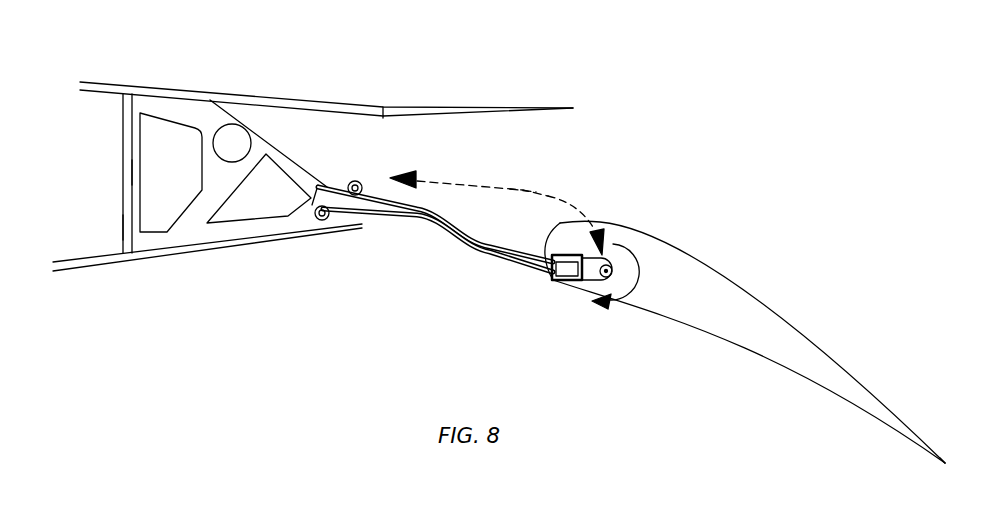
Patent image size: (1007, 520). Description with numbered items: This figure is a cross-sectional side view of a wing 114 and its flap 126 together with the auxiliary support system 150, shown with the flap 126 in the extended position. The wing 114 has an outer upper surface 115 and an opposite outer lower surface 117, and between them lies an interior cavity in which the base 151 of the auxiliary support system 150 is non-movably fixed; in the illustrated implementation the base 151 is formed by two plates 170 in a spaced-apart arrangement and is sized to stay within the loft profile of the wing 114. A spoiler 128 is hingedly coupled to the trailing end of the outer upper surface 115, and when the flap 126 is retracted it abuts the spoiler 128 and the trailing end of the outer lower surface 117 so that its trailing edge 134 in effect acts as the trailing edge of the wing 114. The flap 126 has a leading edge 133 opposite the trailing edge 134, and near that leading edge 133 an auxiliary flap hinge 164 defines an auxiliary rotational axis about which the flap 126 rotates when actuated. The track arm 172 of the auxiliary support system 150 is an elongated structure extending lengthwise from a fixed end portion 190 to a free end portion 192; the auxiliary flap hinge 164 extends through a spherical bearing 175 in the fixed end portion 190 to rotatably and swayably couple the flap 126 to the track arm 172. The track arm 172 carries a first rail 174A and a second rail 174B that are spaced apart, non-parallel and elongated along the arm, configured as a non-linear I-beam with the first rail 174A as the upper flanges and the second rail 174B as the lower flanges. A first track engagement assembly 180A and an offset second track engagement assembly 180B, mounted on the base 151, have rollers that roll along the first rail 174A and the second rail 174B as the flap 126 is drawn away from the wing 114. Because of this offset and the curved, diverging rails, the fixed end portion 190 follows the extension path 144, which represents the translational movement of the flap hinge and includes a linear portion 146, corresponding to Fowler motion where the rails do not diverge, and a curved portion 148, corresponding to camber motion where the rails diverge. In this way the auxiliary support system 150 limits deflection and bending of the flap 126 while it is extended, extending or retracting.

The wing 114 is at (307, 108).
The outer upper surface 115 is at (213, 92).
The outer lower surface 117 is at (150, 260).
The flap 126 is at (732, 307).
The spoiler 128 is at (462, 110).
The leading edge of the flap 133 is at (560, 223).
The trailing edge of the flap 134 is at (945, 465).
The extension path 144 is at (523, 188).
The linear portion 146 is at (457, 180).
The curved portion 148 is at (573, 207).
The auxiliary support system 150 is at (121, 226).
The base 151 is at (127, 173).
The auxiliary flap hinge 164 is at (617, 300).
The plates 170 is at (132, 103).
The track arm 172 is at (450, 241).
The first rail 174A is at (464, 219).
The second rail 174B is at (402, 216).
The spherical bearing 175 is at (601, 276).
The first track engagement assembly 180A is at (359, 178).
The second track engagement assembly 180B is at (321, 221).
The fixed end portion 190 is at (608, 242).
The free end portion 192 is at (331, 182).